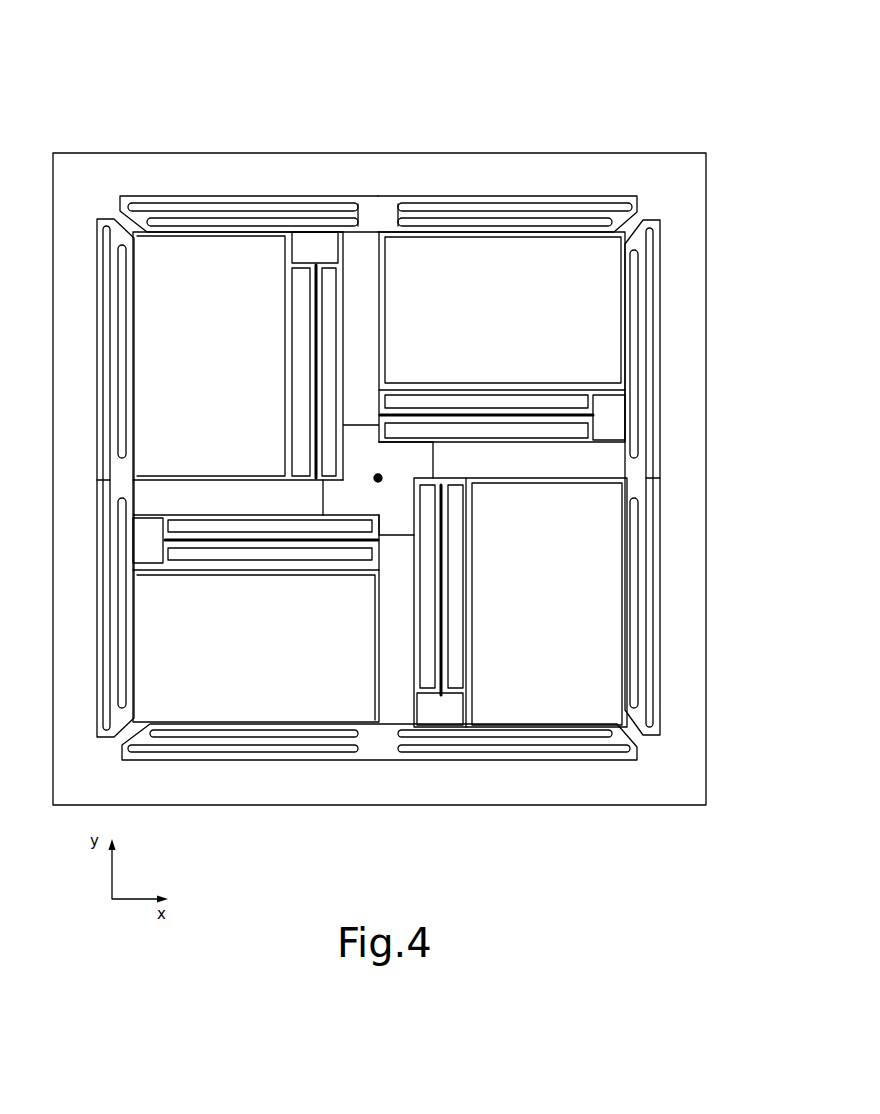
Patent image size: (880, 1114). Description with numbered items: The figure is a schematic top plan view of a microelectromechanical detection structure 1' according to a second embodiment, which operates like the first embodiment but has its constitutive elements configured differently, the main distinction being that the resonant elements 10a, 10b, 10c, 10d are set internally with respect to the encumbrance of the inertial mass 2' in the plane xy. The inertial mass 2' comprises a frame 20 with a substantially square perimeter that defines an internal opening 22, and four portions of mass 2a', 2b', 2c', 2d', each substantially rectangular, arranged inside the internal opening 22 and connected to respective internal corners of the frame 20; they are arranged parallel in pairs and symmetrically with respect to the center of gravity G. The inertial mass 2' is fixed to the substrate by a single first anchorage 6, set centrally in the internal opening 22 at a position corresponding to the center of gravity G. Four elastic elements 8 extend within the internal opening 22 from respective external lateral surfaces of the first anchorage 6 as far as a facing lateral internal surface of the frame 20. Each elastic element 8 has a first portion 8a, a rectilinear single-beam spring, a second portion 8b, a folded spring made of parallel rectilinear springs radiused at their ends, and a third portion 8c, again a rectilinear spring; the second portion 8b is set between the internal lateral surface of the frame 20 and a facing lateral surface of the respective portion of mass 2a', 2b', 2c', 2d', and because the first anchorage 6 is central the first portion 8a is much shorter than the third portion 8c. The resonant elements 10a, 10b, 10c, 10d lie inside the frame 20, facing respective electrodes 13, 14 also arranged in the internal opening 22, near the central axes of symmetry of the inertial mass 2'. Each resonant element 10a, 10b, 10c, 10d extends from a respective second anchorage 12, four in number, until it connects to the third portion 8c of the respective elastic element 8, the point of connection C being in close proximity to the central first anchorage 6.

The microelectromechanical detection structure 1' is at (379, 453).
The inertial mass 2' is at (378, 474).
The frame 20 is at (443, 170).
The internal opening 22 is at (336, 201).
The elastic element 8 is at (350, 761).
The first portion 8a is at (376, 200).
The second portion 8b is at (507, 200).
The third portion 8c is at (378, 366).
The portion of mass 2a' is at (238, 356).
The portion of mass 2b' is at (502, 337).
The portion of mass 2c' is at (520, 602).
The portion of mass 2d' is at (256, 601).
The resonant element 10a is at (316, 302).
The resonant element 10b is at (502, 420).
The resonant element 10c is at (440, 662).
The resonant element 10d is at (273, 540).
The second anchorage 12 is at (328, 242).
The electrode 13 is at (543, 428).
The electrode 14 is at (545, 398).
The first anchorage 6 is at (392, 518).
The center of gravity G is at (384, 487).
The point of connection C is at (380, 413).